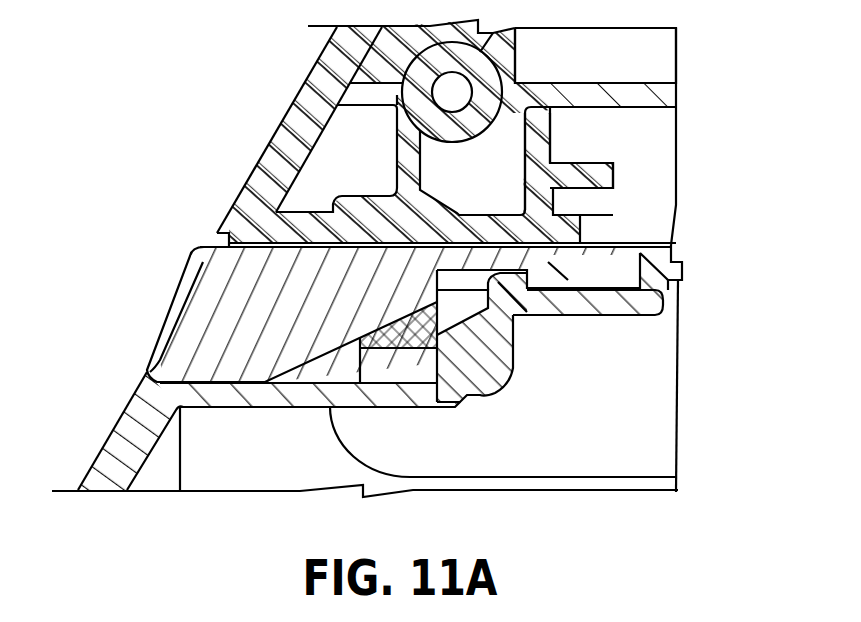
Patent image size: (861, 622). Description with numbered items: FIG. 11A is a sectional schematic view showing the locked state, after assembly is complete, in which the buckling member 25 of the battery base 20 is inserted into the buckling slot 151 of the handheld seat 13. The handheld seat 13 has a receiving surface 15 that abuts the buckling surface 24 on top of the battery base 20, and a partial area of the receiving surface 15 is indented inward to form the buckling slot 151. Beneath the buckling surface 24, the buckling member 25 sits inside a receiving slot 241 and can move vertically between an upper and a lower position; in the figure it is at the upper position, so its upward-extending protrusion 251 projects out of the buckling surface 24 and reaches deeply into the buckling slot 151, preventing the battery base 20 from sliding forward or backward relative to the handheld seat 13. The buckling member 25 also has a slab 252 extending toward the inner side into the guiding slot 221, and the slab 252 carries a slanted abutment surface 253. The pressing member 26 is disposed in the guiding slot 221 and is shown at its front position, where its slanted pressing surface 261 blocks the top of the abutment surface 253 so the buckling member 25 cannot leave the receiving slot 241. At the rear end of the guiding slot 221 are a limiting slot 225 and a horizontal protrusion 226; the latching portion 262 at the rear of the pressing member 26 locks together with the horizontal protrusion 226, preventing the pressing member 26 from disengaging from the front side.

The handheld seat 13 is at (328, 42).
The buckling slot 151 is at (365, 150).
The receiving surface 15 is at (310, 243).
The buckling surface 24 is at (217, 246).
The buckling member 25 is at (763, 112).
The protrusion 251 is at (565, 128).
The slab 252 is at (640, 260).
The abutment surface 253 is at (556, 197).
The pressing member 26 is at (180, 340).
The pressing surface 261 is at (327, 323).
The latching portion 262 is at (563, 267).
The receiving slot 241 is at (403, 360).
The guiding slot 221 is at (320, 373).
The limiting slot 225 is at (612, 272).
The horizontal protrusion 226 is at (553, 283).
The battery base 20 is at (130, 443).